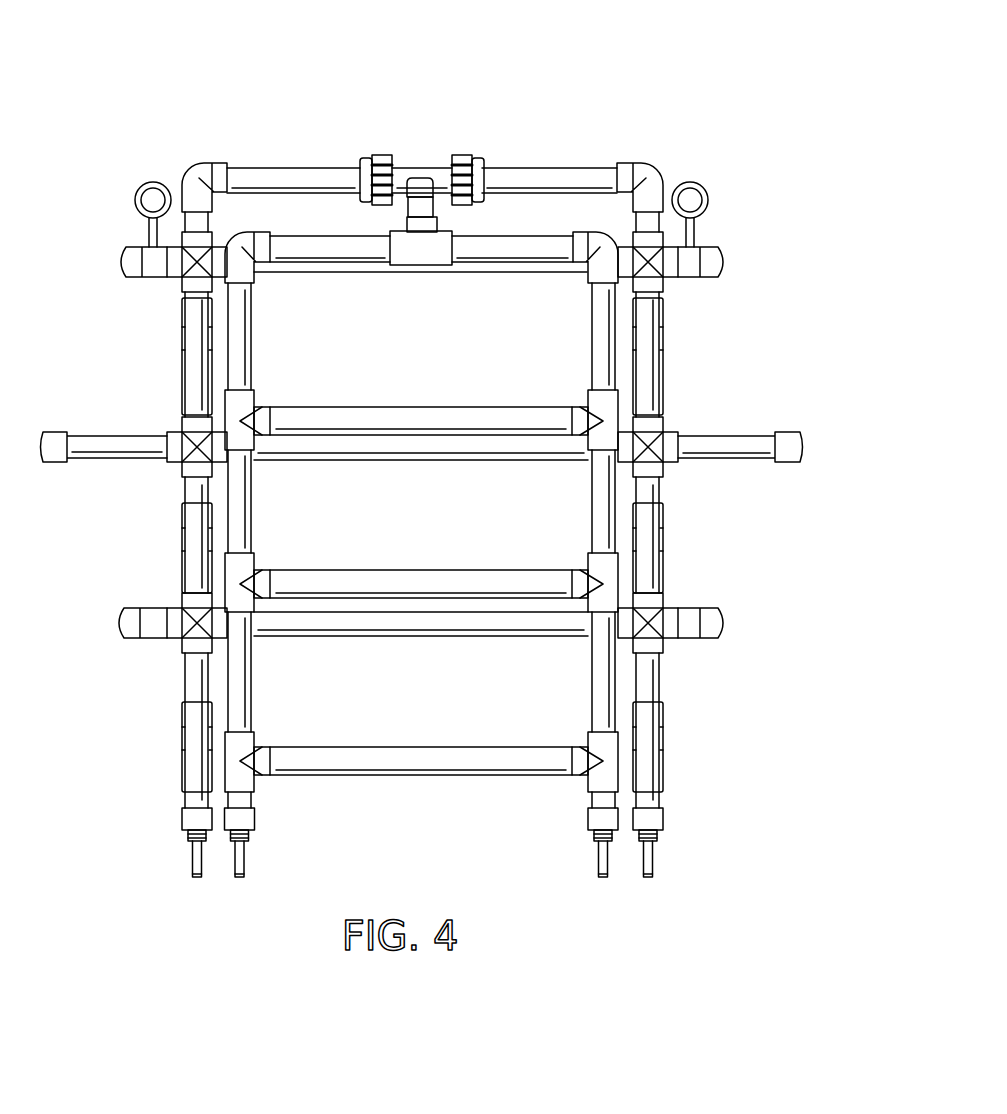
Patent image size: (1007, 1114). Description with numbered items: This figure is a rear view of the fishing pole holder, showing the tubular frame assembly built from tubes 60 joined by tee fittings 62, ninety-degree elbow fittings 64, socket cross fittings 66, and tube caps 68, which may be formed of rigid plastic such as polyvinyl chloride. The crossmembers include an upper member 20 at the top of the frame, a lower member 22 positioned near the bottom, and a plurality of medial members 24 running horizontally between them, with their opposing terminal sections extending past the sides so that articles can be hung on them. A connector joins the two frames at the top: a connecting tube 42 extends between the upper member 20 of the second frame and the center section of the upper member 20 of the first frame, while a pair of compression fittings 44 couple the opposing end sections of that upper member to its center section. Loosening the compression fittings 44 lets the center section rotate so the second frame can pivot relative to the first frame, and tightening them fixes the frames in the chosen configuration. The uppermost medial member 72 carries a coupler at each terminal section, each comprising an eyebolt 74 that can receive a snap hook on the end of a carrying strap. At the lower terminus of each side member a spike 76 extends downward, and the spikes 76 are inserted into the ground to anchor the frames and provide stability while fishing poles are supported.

The upper member 20 is at (340, 240).
The lower member 22 is at (540, 770).
The medial member 24 is at (415, 578).
The connecting tube 42 is at (425, 205).
The compression fitting 44 is at (473, 155).
The tube 60 is at (323, 757).
The tee fitting 62 is at (253, 410).
The 90° elbow fitting 64 is at (247, 240).
The socket cross fitting 66 is at (652, 625).
The tube cap 68 is at (727, 623).
The uppermost medial member 72 is at (537, 272).
The eyebolt 74 is at (698, 187).
The spike 76 is at (647, 876).